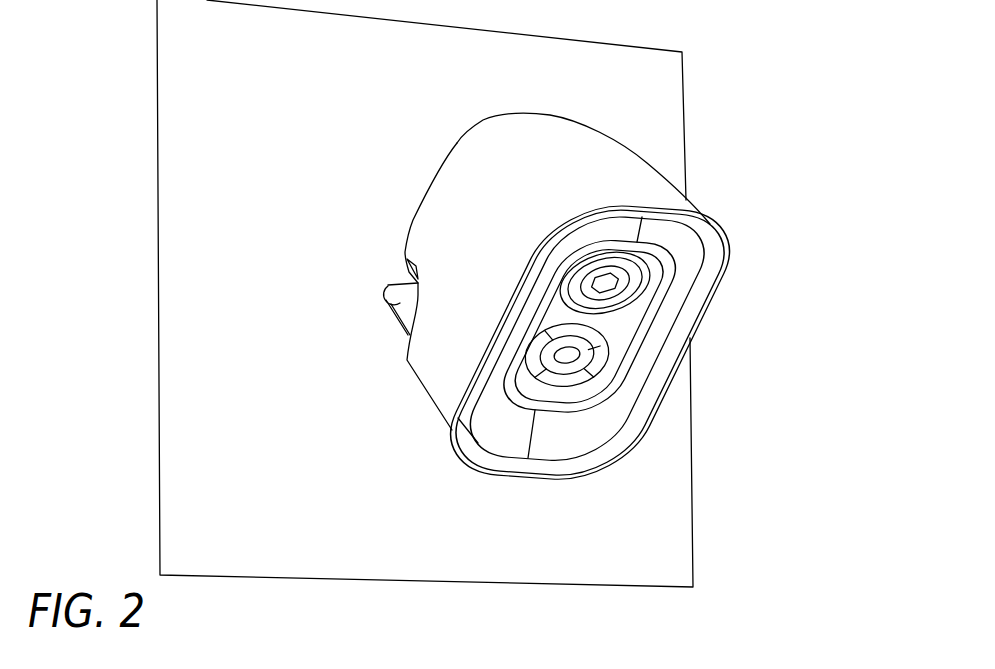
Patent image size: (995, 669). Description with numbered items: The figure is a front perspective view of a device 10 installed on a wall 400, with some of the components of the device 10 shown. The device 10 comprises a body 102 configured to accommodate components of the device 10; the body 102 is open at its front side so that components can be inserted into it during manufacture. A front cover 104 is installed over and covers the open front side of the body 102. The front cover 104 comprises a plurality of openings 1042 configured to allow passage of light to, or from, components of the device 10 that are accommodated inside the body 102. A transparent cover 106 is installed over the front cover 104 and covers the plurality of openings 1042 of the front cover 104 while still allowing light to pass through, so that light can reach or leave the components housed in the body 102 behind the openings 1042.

The device 10 is at (717, 130).
The body 102 is at (466, 150).
The front cover 104 is at (588, 430).
The transparent cover 106 is at (612, 337).
The openings 1042 is at (603, 277).
The wall 400 is at (187, 331).